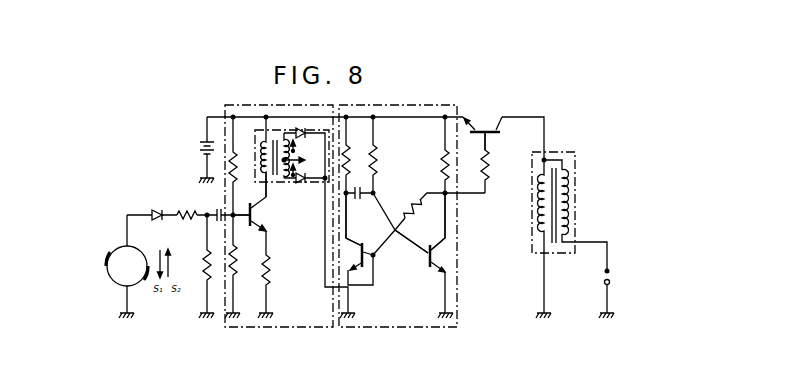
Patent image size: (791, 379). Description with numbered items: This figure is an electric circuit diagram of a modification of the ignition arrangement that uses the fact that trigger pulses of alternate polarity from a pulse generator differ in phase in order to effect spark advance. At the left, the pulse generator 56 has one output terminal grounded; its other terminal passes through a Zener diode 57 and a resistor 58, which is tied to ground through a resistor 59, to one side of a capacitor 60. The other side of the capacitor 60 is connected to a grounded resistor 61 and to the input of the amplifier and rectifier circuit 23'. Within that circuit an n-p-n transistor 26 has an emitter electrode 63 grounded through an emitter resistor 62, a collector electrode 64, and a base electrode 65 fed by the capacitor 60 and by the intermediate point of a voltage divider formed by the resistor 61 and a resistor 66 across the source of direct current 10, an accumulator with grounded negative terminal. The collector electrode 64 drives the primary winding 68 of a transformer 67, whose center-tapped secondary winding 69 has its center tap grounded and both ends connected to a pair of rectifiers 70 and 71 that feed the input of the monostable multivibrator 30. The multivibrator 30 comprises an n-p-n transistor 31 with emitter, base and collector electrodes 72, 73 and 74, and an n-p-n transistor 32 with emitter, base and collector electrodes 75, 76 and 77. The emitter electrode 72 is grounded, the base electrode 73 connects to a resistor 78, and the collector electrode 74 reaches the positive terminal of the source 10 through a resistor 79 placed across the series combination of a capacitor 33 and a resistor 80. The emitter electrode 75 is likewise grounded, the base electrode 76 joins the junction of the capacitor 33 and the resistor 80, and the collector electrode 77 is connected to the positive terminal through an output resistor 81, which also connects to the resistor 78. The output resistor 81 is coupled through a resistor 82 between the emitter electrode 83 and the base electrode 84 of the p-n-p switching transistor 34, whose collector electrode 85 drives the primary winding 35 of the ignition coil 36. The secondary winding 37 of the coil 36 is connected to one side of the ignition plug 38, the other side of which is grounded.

The source of direct current 10 is at (194, 147).
The amplifier and rectifier circuit 23' is at (279, 227).
The transistor 26 is at (262, 211).
The monostable multivibrator 30 is at (405, 327).
The transistor 31 is at (360, 239).
The transistor 32 is at (425, 253).
The capacitor 33 is at (358, 187).
The switching transistor 34 is at (490, 128).
The primary winding 35 is at (538, 224).
The ignition coil 36 is at (575, 160).
The secondary winding 37 is at (570, 205).
The ignition plug 38 is at (612, 276).
The pulse generator 56 is at (127, 264).
The Zener diode 57 is at (159, 205).
The resistor 58 is at (187, 204).
The resistor 59 is at (205, 265).
The capacitor 60 is at (219, 222).
The resistor 61 is at (237, 258).
The emitter resistor 62 is at (270, 272).
The emitter electrode 63 is at (263, 229).
The collector electrode 64 is at (264, 201).
The base electrode 65 is at (250, 204).
The resistor 66 is at (231, 177).
The transformer 67 is at (289, 183).
The primary winding 68 is at (266, 150).
The center-tapped secondary winding 69 is at (282, 151).
The rectifier 70 is at (309, 143).
The rectifier 71 is at (302, 181).
The emitter electrode 72 is at (339, 259).
The base electrode 73 is at (371, 250).
The collector electrode 74 is at (350, 238).
The emitter electrode 75 is at (440, 270).
The base electrode 76 is at (429, 257).
The collector electrode 77 is at (440, 240).
The resistor 78 is at (418, 205).
The resistor 79 is at (347, 150).
The resistor 80 is at (376, 152).
The output resistor 81 is at (443, 158).
The resistor 82 is at (487, 160).
The emitter electrode 83 is at (472, 126).
The base electrode 84 is at (486, 141).
The collector electrode 85 is at (498, 126).